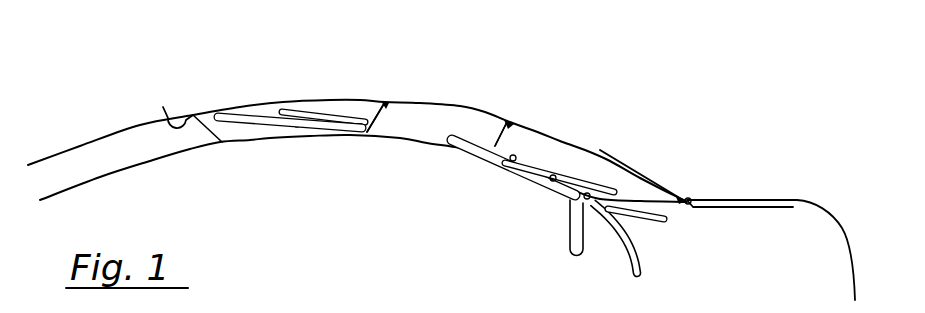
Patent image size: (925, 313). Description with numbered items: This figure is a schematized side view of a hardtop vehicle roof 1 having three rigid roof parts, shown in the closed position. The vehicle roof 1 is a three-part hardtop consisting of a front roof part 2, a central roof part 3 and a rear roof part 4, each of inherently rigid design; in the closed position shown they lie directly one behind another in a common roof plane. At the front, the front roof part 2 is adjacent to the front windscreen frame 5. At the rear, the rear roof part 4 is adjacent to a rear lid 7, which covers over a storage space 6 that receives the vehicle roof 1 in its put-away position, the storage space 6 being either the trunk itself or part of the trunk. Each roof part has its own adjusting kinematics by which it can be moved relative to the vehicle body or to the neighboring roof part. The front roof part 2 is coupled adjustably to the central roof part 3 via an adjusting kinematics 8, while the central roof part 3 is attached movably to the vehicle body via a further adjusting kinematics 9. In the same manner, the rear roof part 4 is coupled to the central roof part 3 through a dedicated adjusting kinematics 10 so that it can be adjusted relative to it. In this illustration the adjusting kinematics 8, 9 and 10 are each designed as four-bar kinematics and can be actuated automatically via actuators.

The vehicle roof 1 is at (282, 88).
The front roof part 2 is at (323, 103).
The central roof part 3 is at (440, 110).
The rear roof part 4 is at (583, 153).
The front windscreen frame 5 is at (167, 102).
The storage space 6 is at (730, 232).
The rear lid 7 is at (808, 202).
The adjusting kinematics 8 is at (262, 132).
The adjusting kinematics 9 is at (565, 235).
The adjusting kinematics 10 is at (661, 229).